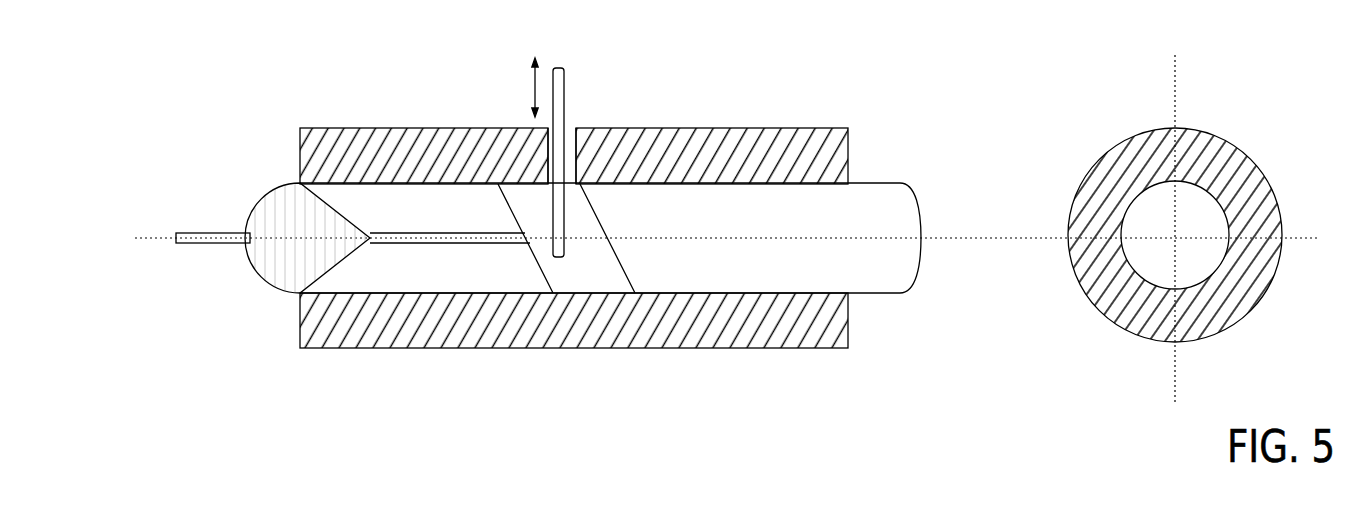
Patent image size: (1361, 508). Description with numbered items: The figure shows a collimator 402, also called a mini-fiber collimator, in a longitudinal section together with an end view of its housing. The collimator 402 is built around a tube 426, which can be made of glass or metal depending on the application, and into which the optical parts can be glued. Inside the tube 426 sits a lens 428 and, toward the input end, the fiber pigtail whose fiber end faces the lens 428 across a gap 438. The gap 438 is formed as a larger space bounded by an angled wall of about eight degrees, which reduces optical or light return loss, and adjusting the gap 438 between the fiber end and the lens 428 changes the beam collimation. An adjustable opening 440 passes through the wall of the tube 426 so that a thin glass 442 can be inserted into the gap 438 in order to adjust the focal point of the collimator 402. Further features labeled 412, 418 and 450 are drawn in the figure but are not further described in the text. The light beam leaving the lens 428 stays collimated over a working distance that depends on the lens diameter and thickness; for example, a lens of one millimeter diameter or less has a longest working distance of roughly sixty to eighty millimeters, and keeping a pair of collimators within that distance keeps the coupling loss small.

The collimator 402 is at (242, 78).
The inner conductor wire 412 is at (466, 279).
The lead wire 418 is at (228, 232).
The tube 426 is at (801, 170).
The lens 428 is at (808, 279).
The gap 438 is at (611, 279).
The adjustable opening 440 is at (575, 122).
The thin glass 442 is at (557, 67).
The direction of movement 450 is at (532, 93).